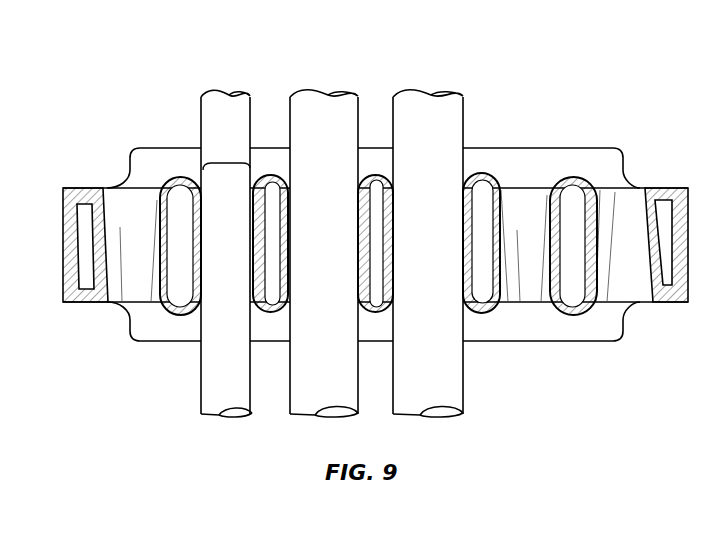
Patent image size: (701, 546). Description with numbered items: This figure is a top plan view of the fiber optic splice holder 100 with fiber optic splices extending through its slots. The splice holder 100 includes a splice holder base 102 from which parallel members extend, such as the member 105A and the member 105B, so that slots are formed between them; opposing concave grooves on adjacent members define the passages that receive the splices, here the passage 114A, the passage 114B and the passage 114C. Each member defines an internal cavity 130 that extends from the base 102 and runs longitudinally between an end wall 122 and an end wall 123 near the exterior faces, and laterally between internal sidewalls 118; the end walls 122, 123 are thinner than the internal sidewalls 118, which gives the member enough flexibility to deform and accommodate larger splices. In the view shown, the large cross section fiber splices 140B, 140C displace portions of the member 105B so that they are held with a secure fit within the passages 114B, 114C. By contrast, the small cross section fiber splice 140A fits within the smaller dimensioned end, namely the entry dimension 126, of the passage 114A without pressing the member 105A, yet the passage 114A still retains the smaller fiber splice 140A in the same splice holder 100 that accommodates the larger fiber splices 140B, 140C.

The fiber optic splice holder 100 is at (547, 48).
The splice holder base 102 is at (543, 175).
The member 105A is at (277, 300).
The member 105B is at (377, 173).
The passage 114A is at (257, 182).
The passage 114B is at (362, 180).
The passage 114C is at (463, 185).
The internal sidewall 118 is at (157, 253).
The end wall 122 is at (175, 313).
The end wall 123 is at (177, 182).
The entry dimension 126 is at (223, 163).
The internal cavity 130 is at (273, 197).
The fiber splice 140A is at (247, 227).
The fiber splice 140B is at (348, 226).
The fiber splice 140C is at (453, 226).